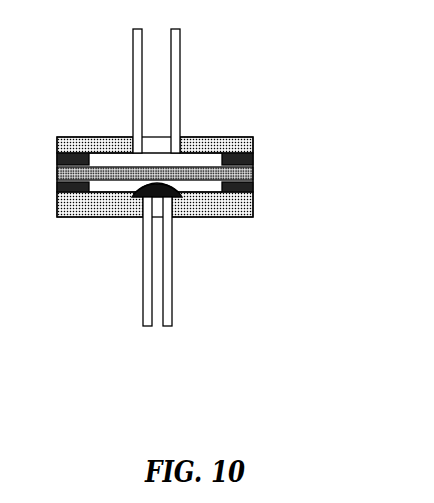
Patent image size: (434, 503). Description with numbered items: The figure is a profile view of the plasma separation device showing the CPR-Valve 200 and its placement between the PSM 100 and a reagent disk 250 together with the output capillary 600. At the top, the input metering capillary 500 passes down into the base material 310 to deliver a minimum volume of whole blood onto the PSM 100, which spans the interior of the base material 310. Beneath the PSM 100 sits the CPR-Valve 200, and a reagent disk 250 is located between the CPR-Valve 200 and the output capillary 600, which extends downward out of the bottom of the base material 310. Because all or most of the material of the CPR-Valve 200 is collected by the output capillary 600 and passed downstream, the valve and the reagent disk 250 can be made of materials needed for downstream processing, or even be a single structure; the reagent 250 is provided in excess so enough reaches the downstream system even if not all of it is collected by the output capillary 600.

The PSM 100 is at (252, 168).
The CPR-Valve 200 is at (180, 200).
The reagent disk 250 is at (133, 201).
The base material 310 is at (257, 203).
The input metering capillary 500 is at (181, 101).
The output capillary 600 is at (142, 287).